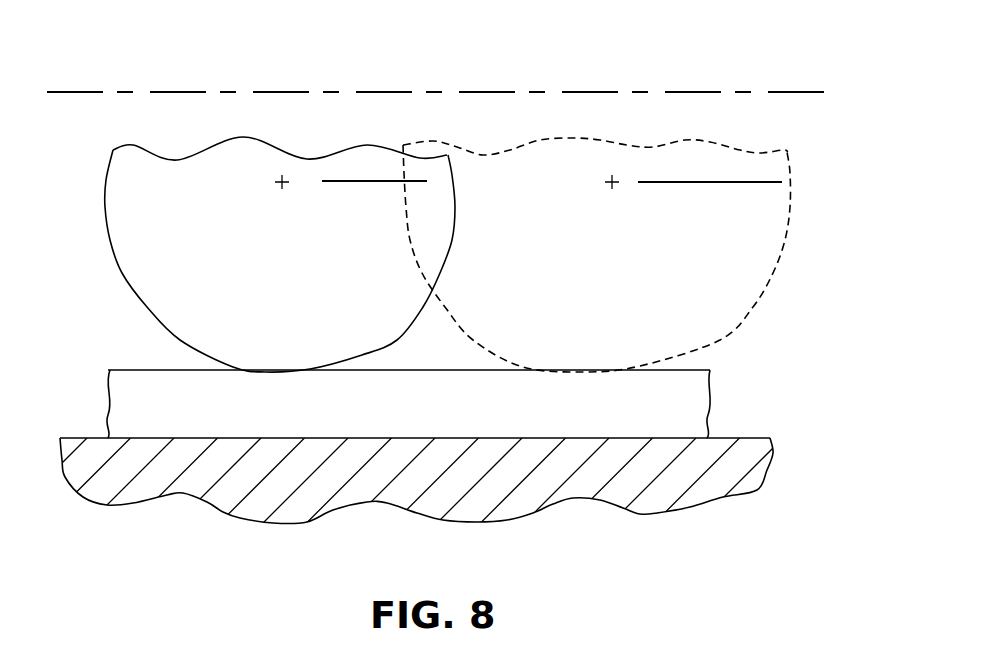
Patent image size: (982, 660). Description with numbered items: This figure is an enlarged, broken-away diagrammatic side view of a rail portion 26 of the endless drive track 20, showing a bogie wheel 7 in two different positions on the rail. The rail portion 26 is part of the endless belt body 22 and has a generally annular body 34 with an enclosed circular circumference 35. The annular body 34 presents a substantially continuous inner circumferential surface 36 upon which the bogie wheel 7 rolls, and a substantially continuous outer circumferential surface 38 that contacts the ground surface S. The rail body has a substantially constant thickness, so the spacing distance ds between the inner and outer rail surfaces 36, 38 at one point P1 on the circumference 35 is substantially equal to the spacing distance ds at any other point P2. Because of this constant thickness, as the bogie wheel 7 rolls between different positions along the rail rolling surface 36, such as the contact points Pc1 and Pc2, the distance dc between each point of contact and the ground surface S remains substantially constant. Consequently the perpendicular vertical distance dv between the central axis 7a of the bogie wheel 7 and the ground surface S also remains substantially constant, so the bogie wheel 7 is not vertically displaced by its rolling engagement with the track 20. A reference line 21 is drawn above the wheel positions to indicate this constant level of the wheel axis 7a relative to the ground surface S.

The reference plane 21 is at (369, 92).
The bogie wheel 7 is at (207, 177).
The central axis 7a is at (282, 187).
The endless drive track 20 is at (122, 295).
The inner circumferential surface 36 is at (143, 370).
The belt body 22 is at (162, 467).
The ground surface S is at (79, 435).
The rail portion 26 is at (250, 442).
The annular body 34 is at (457, 412).
The circumference 35 is at (510, 440).
The outer circumferential surface 38 is at (582, 440).
The point on circumference P1 is at (185, 440).
The other point on circumference P2 is at (480, 440).
The first contact point Pc1 is at (285, 372).
The second contact point Pc2 is at (591, 372).
The vertical distance dv is at (389, 436).
The spacing distance ds is at (185, 372).
The contact distance dc is at (285, 372).